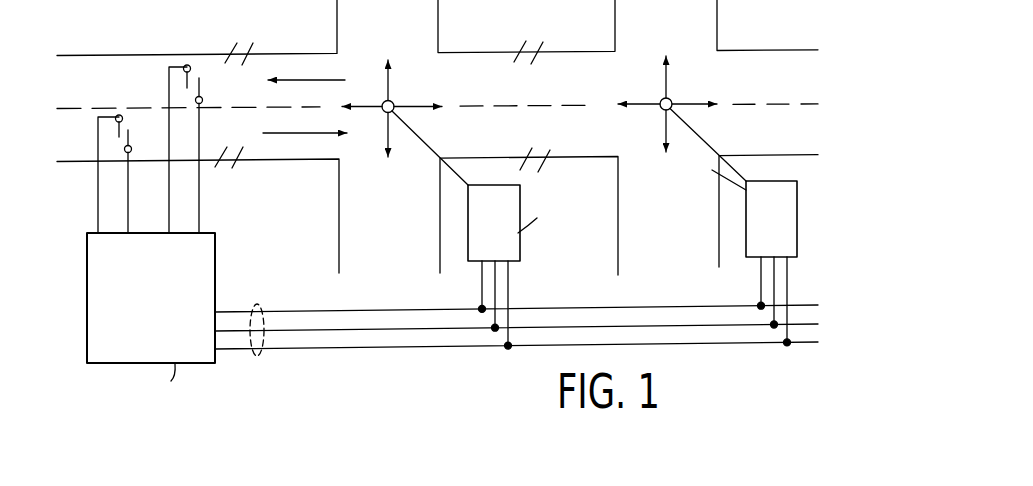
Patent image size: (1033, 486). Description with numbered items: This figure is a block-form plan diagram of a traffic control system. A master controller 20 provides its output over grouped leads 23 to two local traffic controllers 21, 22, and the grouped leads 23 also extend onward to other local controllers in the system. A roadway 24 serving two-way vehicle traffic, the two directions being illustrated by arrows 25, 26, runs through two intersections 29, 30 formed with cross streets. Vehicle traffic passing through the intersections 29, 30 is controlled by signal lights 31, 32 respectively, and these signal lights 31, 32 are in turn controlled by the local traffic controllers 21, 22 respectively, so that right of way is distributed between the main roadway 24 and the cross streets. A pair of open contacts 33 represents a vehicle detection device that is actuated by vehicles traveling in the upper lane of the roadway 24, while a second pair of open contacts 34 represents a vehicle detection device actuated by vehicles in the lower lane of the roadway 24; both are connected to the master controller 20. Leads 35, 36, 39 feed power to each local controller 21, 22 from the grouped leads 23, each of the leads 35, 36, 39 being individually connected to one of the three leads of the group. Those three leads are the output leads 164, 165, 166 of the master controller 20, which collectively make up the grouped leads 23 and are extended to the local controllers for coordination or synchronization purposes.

The master controller 20 is at (151, 319).
The local traffic controller 21 is at (538, 221).
The local traffic controller 22 is at (710, 206).
The grouped leads 23 is at (255, 304).
The roadway 24 is at (73, 92).
The arrow 25 is at (302, 77).
The arrow 26 is at (295, 135).
The intersection 29 is at (372, 36).
The intersection 30 is at (654, 34).
The signal light 31 is at (392, 101).
The signal light 32 is at (670, 99).
The pair of open contacts 33 is at (203, 79).
The pair of open contacts 34 is at (135, 129).
The lead 35 is at (482, 287).
The lead 36 is at (497, 273).
The lead 39 is at (509, 296).
The output lead 164 is at (331, 350).
The output lead 165 is at (356, 329).
The output lead 166 is at (391, 309).